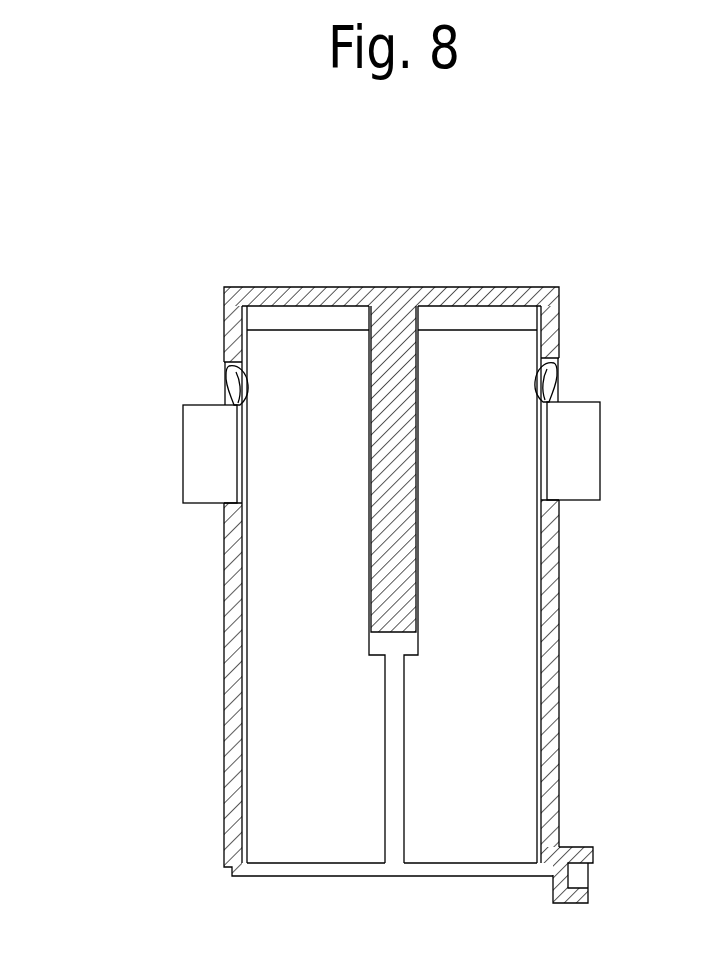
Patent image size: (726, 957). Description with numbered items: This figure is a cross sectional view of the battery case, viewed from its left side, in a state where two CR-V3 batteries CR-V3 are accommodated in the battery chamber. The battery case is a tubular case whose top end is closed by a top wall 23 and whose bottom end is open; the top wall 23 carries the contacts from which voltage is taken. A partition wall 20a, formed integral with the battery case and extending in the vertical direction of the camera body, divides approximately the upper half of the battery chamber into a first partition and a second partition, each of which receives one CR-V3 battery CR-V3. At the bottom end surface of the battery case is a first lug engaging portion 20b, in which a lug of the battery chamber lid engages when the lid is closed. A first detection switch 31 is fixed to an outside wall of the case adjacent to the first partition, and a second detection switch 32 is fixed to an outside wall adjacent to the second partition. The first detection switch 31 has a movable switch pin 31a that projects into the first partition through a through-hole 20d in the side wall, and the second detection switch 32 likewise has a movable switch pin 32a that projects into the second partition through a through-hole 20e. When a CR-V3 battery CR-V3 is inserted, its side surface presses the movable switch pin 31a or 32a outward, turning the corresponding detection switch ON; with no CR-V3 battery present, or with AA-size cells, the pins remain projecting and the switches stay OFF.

The top wall 23 is at (366, 287).
The partition wall 20a is at (393, 555).
The first lug engaging portion 20b is at (582, 872).
The through-hole 20d is at (226, 378).
The through-hole 20e is at (556, 378).
The first detection switch 31 is at (205, 457).
The movable switch pin 31a is at (243, 418).
The second detection switch 32 is at (578, 448).
The movable switch pin 32a is at (539, 416).
The CR-V3 battery CR-V3 is at (297, 712).